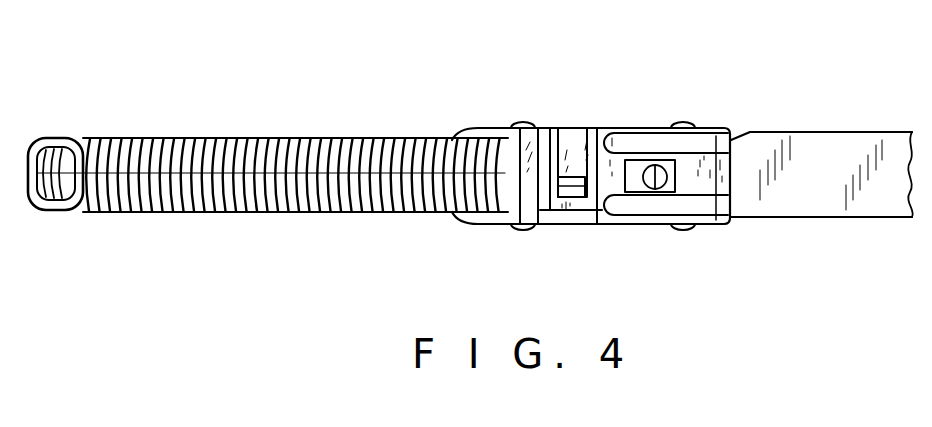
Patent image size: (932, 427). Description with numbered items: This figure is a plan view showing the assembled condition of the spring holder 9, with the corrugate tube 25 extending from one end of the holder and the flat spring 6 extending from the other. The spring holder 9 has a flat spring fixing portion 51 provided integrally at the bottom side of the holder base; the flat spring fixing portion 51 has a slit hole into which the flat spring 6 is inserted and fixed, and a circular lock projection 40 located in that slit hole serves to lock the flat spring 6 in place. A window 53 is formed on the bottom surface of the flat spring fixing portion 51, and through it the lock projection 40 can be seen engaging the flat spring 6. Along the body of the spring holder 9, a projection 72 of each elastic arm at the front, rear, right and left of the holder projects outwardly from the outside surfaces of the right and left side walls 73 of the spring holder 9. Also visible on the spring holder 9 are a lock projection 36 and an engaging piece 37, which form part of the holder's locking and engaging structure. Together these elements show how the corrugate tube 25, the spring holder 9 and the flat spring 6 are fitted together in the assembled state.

The flat spring 6 is at (850, 132).
The spring holder 9 is at (631, 113).
The corrugate tube 25 is at (361, 213).
The lock projection 36 is at (571, 170).
The engaging piece 37 is at (572, 222).
The circular lock projection 40 is at (656, 190).
The flat spring fixing portion 51 is at (718, 173).
The window 53 is at (634, 192).
The projection 72 is at (522, 122).
The side wall 73 is at (648, 128).